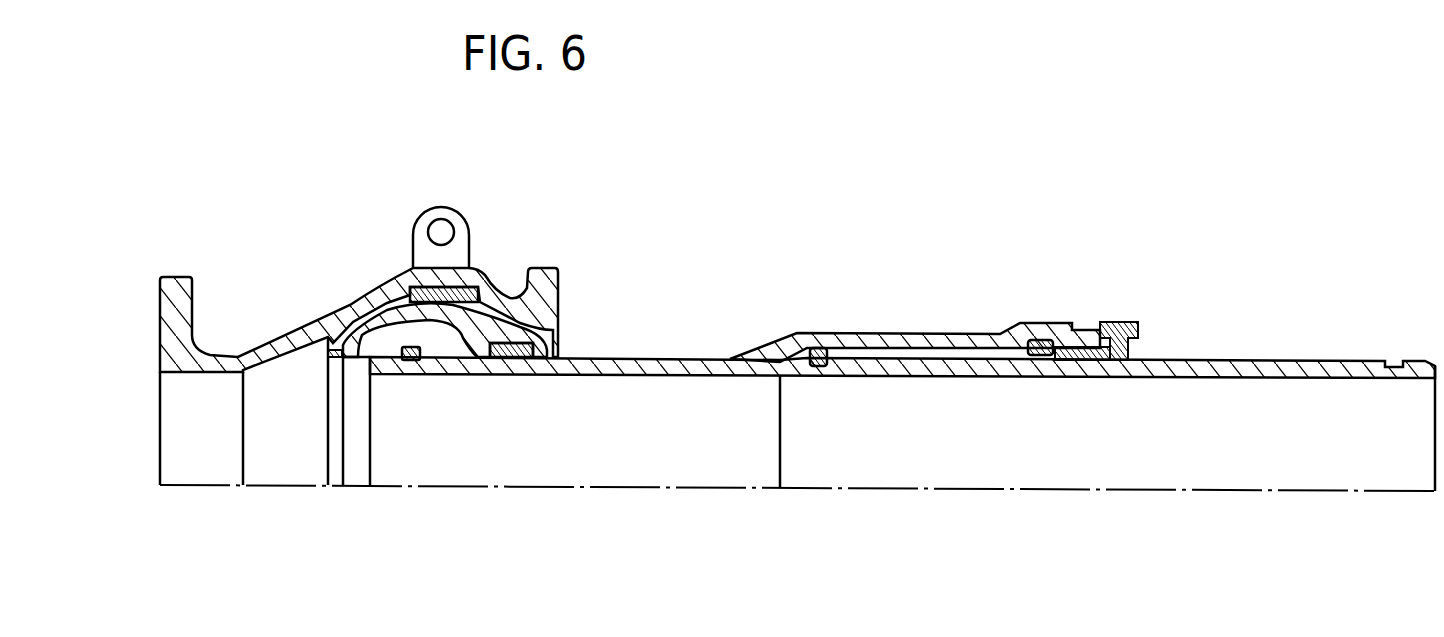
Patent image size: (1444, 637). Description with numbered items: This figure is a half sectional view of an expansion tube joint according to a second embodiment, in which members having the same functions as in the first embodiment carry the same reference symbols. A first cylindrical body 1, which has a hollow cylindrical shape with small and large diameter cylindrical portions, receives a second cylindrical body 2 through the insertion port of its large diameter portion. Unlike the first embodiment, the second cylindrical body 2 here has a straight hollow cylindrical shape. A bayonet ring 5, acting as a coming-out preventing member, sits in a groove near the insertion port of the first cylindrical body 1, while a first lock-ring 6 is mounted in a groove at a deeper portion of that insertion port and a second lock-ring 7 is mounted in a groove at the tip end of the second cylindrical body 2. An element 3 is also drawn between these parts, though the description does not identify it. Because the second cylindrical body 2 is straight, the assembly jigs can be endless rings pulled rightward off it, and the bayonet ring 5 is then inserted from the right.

The first cylindrical body 1 is at (737, 318).
The second cylindrical body 2 is at (1217, 385).
The spacer 3 is at (1073, 365).
The bayonet ring 5 is at (1113, 362).
The first lock-ring 6 is at (1043, 340).
The second lock-ring 7 is at (823, 345).